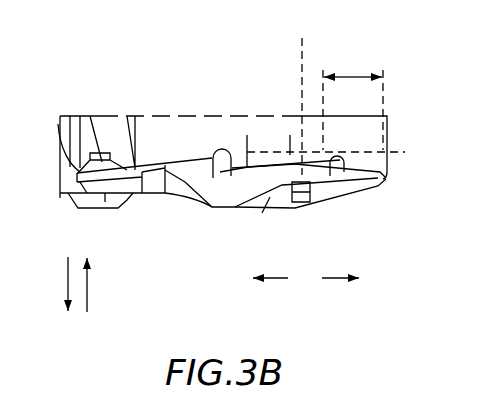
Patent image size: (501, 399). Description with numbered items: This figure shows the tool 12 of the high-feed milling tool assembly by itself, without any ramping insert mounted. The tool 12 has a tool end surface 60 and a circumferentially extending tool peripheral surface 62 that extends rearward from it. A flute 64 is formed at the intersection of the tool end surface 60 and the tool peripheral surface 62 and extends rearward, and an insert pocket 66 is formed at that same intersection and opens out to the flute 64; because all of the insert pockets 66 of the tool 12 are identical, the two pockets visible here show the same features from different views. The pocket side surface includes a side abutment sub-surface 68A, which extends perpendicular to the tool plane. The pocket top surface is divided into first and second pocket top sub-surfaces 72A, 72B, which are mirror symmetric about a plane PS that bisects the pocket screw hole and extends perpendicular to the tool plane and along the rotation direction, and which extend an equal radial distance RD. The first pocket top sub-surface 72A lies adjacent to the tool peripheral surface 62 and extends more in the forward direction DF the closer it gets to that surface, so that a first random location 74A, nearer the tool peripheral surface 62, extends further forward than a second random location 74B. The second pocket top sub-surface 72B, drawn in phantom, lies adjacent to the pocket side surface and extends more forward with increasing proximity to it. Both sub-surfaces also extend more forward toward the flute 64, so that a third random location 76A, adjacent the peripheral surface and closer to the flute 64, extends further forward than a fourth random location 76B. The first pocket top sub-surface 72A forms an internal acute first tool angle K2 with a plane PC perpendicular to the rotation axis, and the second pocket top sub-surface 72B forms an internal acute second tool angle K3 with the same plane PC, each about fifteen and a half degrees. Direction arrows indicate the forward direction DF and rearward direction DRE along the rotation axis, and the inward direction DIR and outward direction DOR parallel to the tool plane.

The tool 12 is at (102, 92).
The tool end surface 60 is at (221, 249).
The tool peripheral surface 62 is at (394, 133).
The flute 64 is at (64, 184).
The insert pocket 66 is at (172, 203).
The side abutment sub-surface 68A is at (122, 184).
The first pocket top sub-surface 72A is at (178, 171).
The second pocket top sub-surface 72B is at (271, 171).
The first random location 74A is at (387, 195).
The second random location 74B is at (330, 167).
The third random location 76A is at (148, 165).
The fourth random location 76B is at (177, 168).
The second tool angle K3 is at (265, 167).
The first tool angle K2 is at (358, 188).
The plane PS is at (309, 93).
The plane PC is at (339, 161).
The radial distance RD is at (353, 94).
The forward direction DF is at (64, 279).
The rearward direction DRE is at (88, 292).
The inward direction DIR is at (281, 279).
The outward direction DOR is at (331, 279).